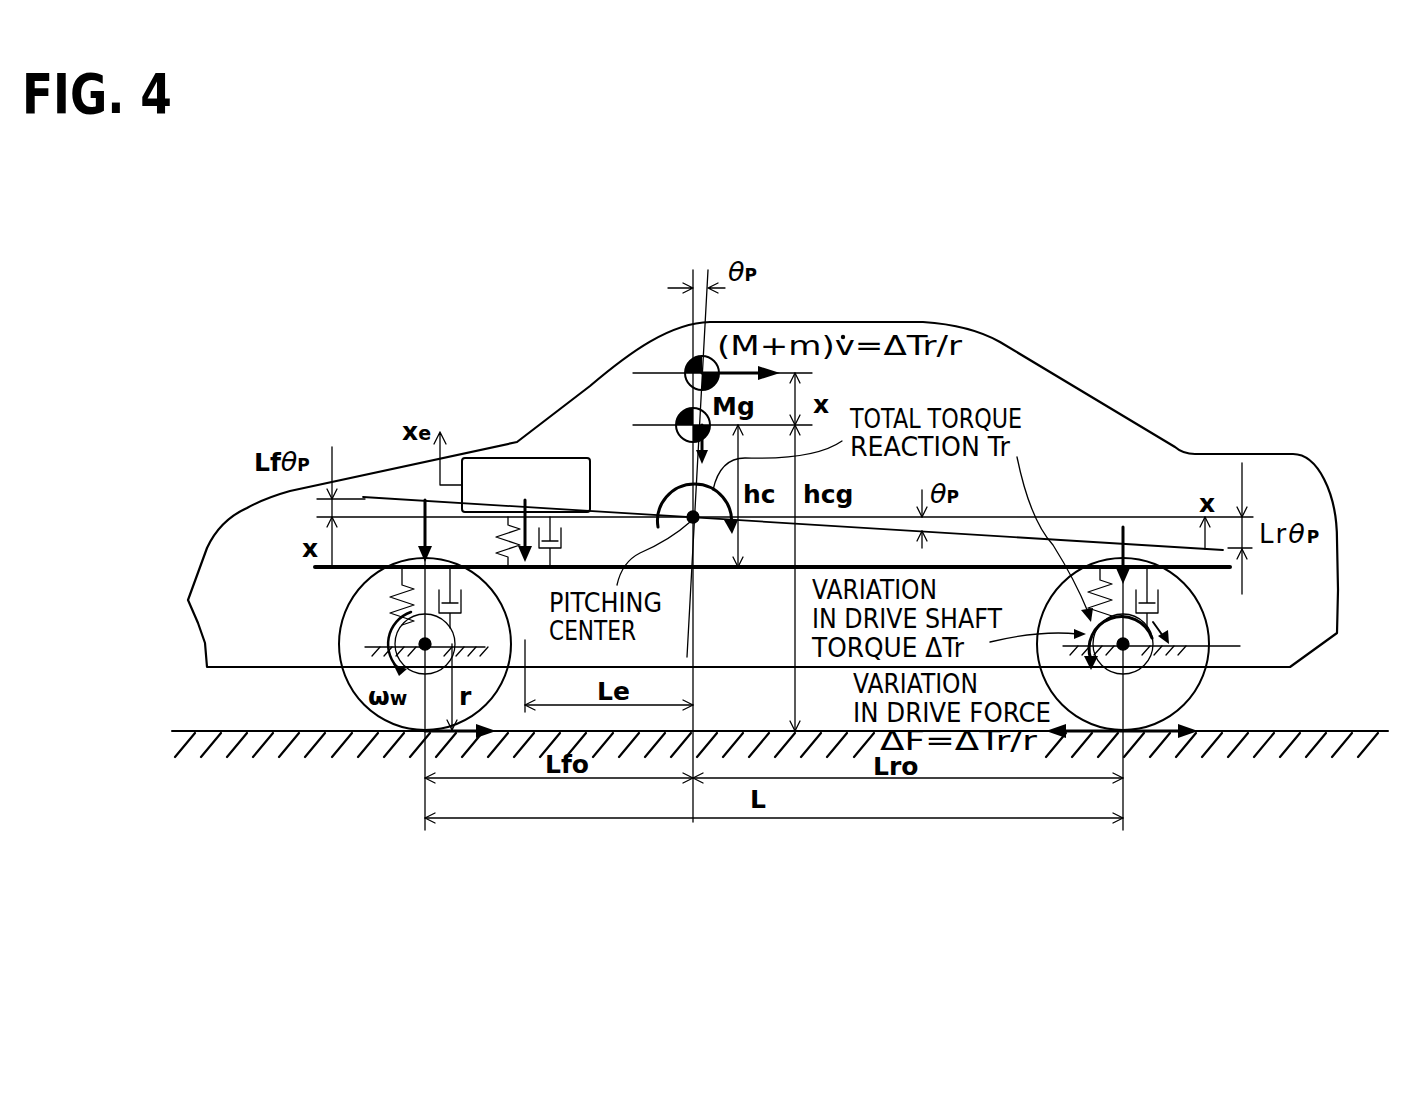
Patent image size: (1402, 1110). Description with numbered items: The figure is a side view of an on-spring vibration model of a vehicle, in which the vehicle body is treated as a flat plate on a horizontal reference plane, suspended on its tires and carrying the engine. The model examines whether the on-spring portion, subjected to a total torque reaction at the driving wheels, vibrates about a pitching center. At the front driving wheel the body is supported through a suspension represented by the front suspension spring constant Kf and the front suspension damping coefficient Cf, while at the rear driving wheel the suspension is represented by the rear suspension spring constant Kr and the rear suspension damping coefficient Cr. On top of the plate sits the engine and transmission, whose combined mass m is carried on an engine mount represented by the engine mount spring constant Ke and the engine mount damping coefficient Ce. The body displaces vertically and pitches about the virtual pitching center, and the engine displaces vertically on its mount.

The front suspension spring constant Kf is at (383, 597).
The front suspension damping coefficient Cf is at (468, 597).
The engine mount spring constant Ke is at (483, 542).
The engine mount damping coefficient Ce is at (573, 542).
The rear suspension spring constant Kr is at (1082, 596).
The rear suspension damping coefficient Cr is at (1166, 597).
The engine mass m is at (526, 485).